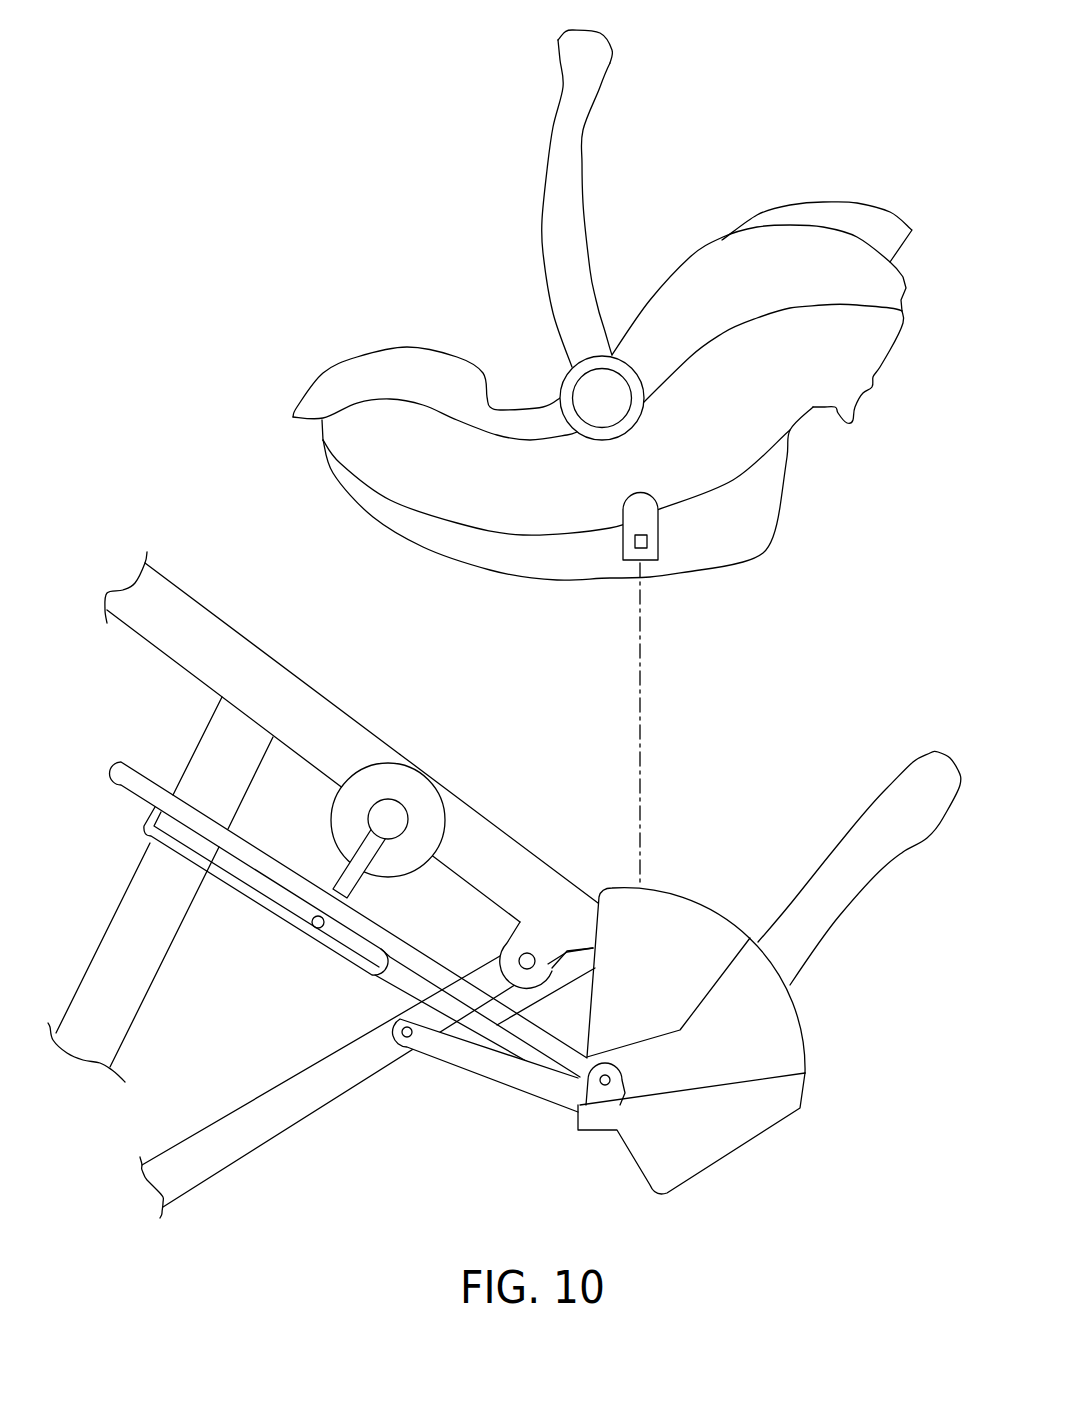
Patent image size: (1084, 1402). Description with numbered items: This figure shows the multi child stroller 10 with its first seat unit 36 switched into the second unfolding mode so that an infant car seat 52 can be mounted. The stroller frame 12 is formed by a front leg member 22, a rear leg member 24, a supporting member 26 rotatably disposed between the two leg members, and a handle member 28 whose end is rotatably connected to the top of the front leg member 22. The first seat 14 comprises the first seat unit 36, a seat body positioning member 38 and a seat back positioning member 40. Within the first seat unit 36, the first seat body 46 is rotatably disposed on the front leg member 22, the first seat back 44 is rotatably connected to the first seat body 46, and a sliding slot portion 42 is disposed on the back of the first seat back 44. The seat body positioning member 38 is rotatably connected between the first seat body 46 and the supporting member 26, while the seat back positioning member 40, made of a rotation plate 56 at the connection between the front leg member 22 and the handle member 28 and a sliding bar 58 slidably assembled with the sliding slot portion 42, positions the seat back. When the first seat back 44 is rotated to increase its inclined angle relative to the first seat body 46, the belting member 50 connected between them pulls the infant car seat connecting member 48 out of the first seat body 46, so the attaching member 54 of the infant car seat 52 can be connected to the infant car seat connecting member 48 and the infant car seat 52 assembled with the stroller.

The multi child stroller 10 is at (822, 663).
The stroller frame 12 is at (323, 874).
The first seat 14 is at (592, 1146).
The front leg member 22 is at (507, 850).
The rear leg member 24 is at (210, 760).
The supporting member 26 is at (312, 1090).
The handle member 28 is at (200, 627).
The first seat unit 36 is at (502, 975).
The seat body positioning member 38 is at (490, 1062).
The seat back positioning member 40 is at (477, 665).
The sliding slot portion 42 is at (270, 907).
The first seat back 44 is at (137, 785).
The first seat body 46 is at (730, 1122).
The infant car seat connecting member 48 is at (690, 927).
The belting member 50 is at (583, 973).
The infant car seat 52 is at (743, 450).
The attaching member 54 is at (653, 527).
The rotation plate 56 is at (412, 790).
The sliding bar 58 is at (345, 885).